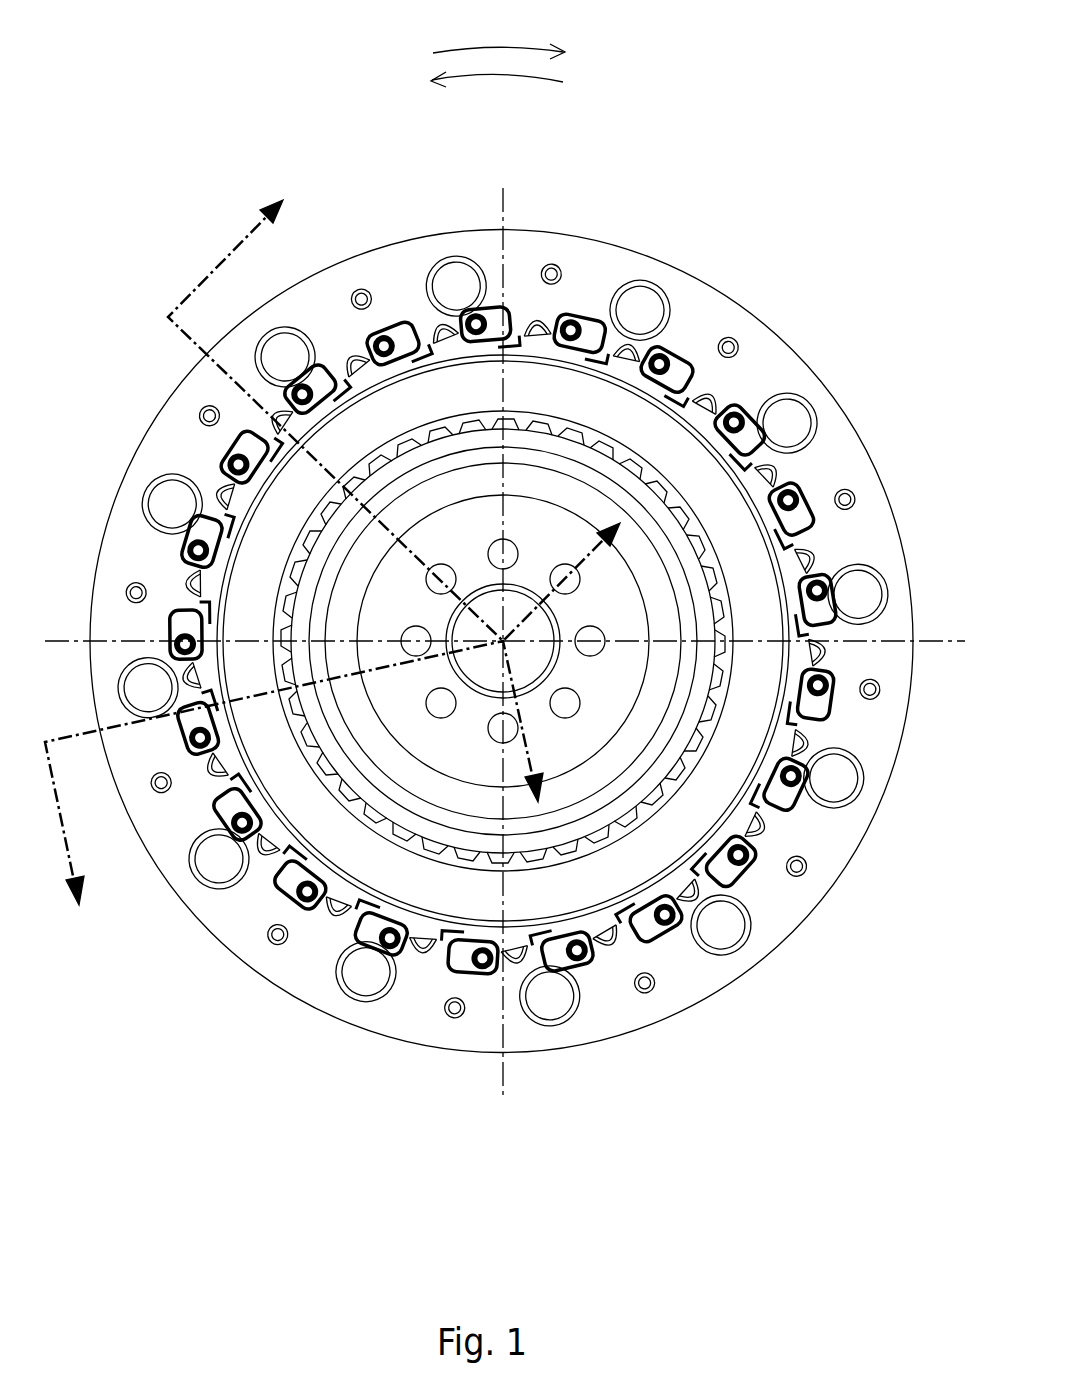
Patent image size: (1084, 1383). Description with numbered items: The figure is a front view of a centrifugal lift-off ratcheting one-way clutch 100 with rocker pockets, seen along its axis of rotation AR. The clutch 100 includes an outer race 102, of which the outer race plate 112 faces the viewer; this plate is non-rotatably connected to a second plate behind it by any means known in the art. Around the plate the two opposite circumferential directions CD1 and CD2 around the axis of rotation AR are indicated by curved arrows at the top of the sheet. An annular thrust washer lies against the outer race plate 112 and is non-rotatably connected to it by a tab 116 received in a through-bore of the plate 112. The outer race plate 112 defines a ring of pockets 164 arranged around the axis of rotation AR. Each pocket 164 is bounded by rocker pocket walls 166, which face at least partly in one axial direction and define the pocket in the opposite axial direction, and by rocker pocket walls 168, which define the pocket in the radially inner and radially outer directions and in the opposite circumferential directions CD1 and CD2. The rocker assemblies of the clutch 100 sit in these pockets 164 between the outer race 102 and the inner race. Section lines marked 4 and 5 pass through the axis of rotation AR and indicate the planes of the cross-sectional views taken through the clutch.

The centrifugal lift-off ratcheting one-way clutch 100 is at (786, 146).
The outer race 102 is at (675, 247).
The outer race plate 112 is at (168, 398).
The tab 116 is at (767, 828).
The pockets 164 is at (713, 397).
The rocker pocket walls 166 is at (700, 397).
The rocker pocket walls 168 is at (777, 470).
The axis of rotation AR is at (507, 644).
The circumferential direction CD1 is at (507, 47).
The circumferential direction CD2 is at (535, 78).
The section line 4- 4 is at (401, 409).
The section line 5- 5 is at (296, 790).